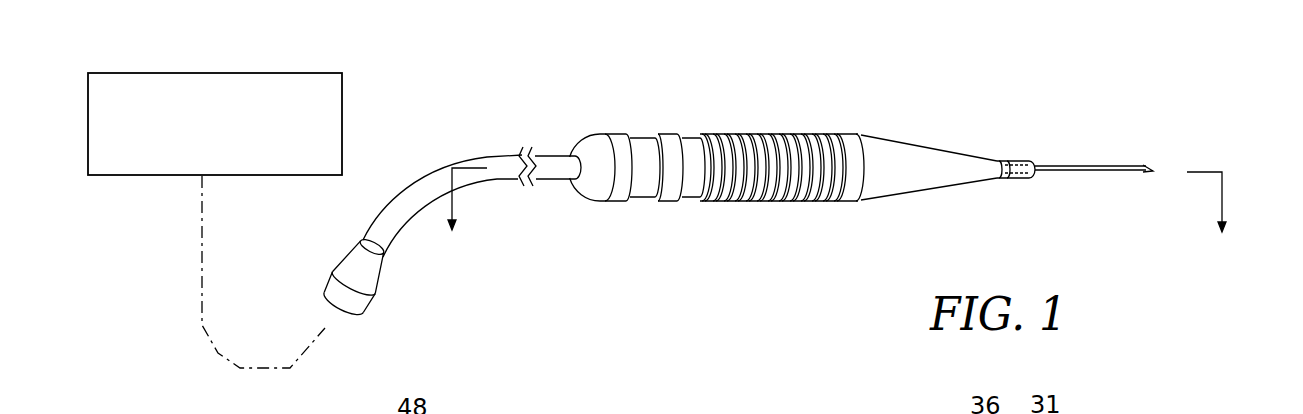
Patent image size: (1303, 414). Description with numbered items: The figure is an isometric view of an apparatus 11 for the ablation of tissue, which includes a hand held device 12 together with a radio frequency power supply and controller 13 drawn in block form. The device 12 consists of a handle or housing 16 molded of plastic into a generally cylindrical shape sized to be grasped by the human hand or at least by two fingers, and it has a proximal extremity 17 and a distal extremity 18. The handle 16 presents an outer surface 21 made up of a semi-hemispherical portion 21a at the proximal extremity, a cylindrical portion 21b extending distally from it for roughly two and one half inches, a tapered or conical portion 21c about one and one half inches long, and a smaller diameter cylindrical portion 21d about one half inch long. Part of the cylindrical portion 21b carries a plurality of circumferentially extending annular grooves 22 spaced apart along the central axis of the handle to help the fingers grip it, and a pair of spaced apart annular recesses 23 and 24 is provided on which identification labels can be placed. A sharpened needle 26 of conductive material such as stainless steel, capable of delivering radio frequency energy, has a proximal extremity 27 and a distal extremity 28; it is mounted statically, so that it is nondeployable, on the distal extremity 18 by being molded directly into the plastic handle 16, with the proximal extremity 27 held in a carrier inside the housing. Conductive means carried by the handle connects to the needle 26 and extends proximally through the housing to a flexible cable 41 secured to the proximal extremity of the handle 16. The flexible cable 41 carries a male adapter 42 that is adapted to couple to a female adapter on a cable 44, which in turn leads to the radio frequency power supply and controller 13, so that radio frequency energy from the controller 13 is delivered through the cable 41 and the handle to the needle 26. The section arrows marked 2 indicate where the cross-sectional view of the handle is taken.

The apparatus 11 is at (873, 166).
The hand held device 12 is at (772, 163).
The radio frequency power supply and controller 13 is at (332, 123).
The handle or housing 16 is at (774, 136).
The proximal extremity 17 is at (629, 144).
The distal extremity 18 is at (1019, 169).
The outer surface 21 is at (821, 179).
The semi-hemispherical portion 21a is at (587, 193).
The cylindrical portion 21b is at (847, 207).
The tapered or conical portion 21c is at (917, 188).
The smaller diameter cylindrical portion 21d is at (1015, 180).
The annular grooves 22 is at (805, 202).
The annular recess 23 is at (635, 188).
The annular recess 24 is at (690, 183).
The sharpened needle 26 is at (1122, 141).
The proximal extremity 27 is at (1017, 163).
The distal extremity 28 is at (1143, 172).
The flexible cable 41 is at (507, 157).
The male adapter 42 is at (363, 287).
The cable 44 is at (197, 374).
The section line 2- 2 is at (835, 224).